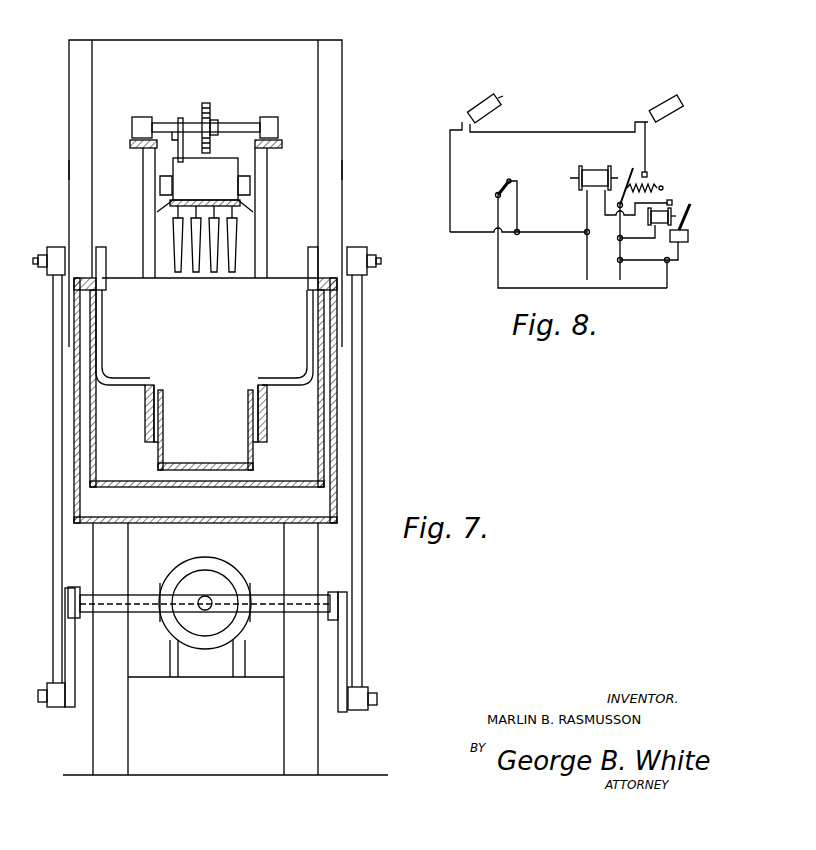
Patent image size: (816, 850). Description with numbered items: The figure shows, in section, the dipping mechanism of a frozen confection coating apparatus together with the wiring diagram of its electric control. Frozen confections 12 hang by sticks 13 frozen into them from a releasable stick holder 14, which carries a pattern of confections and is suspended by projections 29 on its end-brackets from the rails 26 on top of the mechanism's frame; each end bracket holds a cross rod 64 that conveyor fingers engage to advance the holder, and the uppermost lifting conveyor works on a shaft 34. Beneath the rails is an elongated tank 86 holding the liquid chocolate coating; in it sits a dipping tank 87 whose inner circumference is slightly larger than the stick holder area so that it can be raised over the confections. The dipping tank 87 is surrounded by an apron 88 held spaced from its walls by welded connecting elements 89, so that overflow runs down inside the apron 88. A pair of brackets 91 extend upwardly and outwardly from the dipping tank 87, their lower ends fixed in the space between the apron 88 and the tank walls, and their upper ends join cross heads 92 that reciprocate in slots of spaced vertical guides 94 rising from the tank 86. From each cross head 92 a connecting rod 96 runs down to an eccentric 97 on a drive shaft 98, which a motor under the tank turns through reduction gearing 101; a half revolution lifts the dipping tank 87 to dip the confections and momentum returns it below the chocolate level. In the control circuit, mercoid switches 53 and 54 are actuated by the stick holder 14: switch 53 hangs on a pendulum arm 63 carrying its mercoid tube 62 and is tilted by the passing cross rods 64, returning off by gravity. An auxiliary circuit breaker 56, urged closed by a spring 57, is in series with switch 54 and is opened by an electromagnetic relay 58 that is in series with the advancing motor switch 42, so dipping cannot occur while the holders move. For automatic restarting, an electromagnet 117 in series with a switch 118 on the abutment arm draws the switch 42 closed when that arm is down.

In FIG. 7, the frozen confections 12 is at (175, 250).
In FIG. 7, the sticks 13 is at (170, 205).
In FIG. 7, the stick holders 14 is at (250, 206).
In FIG. 7, the rails 26 is at (160, 190).
In FIG. 7, the projections 29 is at (250, 185).
In FIG. 7, the shaft 34 is at (240, 124).
In FIG. 7, the mercoid tube 62 is at (178, 136).
In FIG. 7, the pendulum arm 63 is at (183, 116).
In FIG. 7, the cross rod 64 is at (228, 160).
In FIG. 7, the tank 86 is at (338, 428).
In FIG. 7, the dipping tank 87 is at (256, 457).
In FIG. 7, the apron 88 is at (267, 430).
In FIG. 7, the connecting elements 89 is at (262, 411).
In FIG. 7, the brackets 91 is at (132, 378).
In FIG. 7, the cross head 92 is at (53, 247).
In FIG. 7, the vertical guides 94 is at (76, 165).
In FIG. 7, the connecting rod 96 is at (53, 497).
In FIG. 7, the eccentric 97 is at (68, 637).
In FIG. 7, the drive shaft 98 is at (262, 594).
In FIG. 7, the reduction gearing 101 is at (222, 572).
In FIG. 8, the switch 42 is at (690, 216).
In FIG. 8, the switch 53 is at (484, 104).
In FIG. 8, the switch 54 is at (667, 104).
In FIG. 8, the auxiliary circuit breaker 56 is at (624, 168).
In FIG. 8, the spring 57 is at (656, 186).
In FIG. 8, the electromagnetic relay 58 is at (579, 178).
In FIG. 8, the electromagnet 117 is at (660, 210).
In FIG. 8, the switch 118 is at (492, 187).